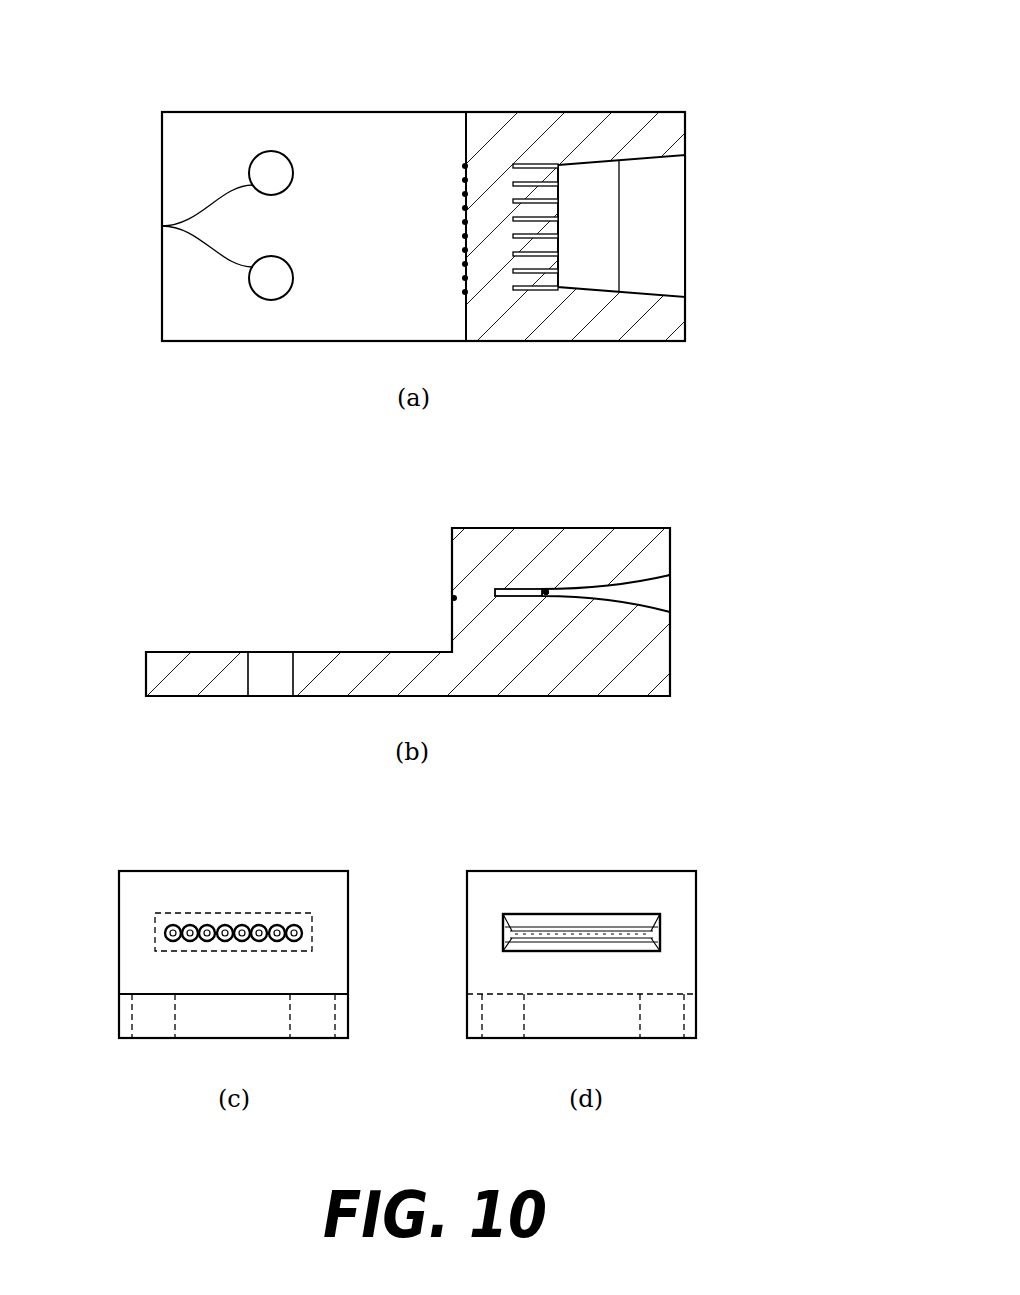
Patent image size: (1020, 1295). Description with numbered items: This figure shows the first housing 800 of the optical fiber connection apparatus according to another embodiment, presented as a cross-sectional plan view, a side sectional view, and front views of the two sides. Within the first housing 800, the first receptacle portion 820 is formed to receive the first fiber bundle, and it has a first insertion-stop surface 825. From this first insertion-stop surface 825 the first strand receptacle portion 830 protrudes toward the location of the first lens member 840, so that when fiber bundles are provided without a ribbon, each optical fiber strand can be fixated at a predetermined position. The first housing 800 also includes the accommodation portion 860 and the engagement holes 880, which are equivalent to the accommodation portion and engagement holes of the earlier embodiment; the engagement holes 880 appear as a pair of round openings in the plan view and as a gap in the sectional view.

The first housing 800 is at (580, 80).
The first receptacle portion 820 is at (685, 193).
The first insertion-stop surface 825 is at (548, 589).
The first strand receptacle portion 830 is at (513, 163).
The first lens member 840 is at (466, 165).
The accommodation portion 860 is at (359, 120).
The engagement holes 880 is at (162, 226).